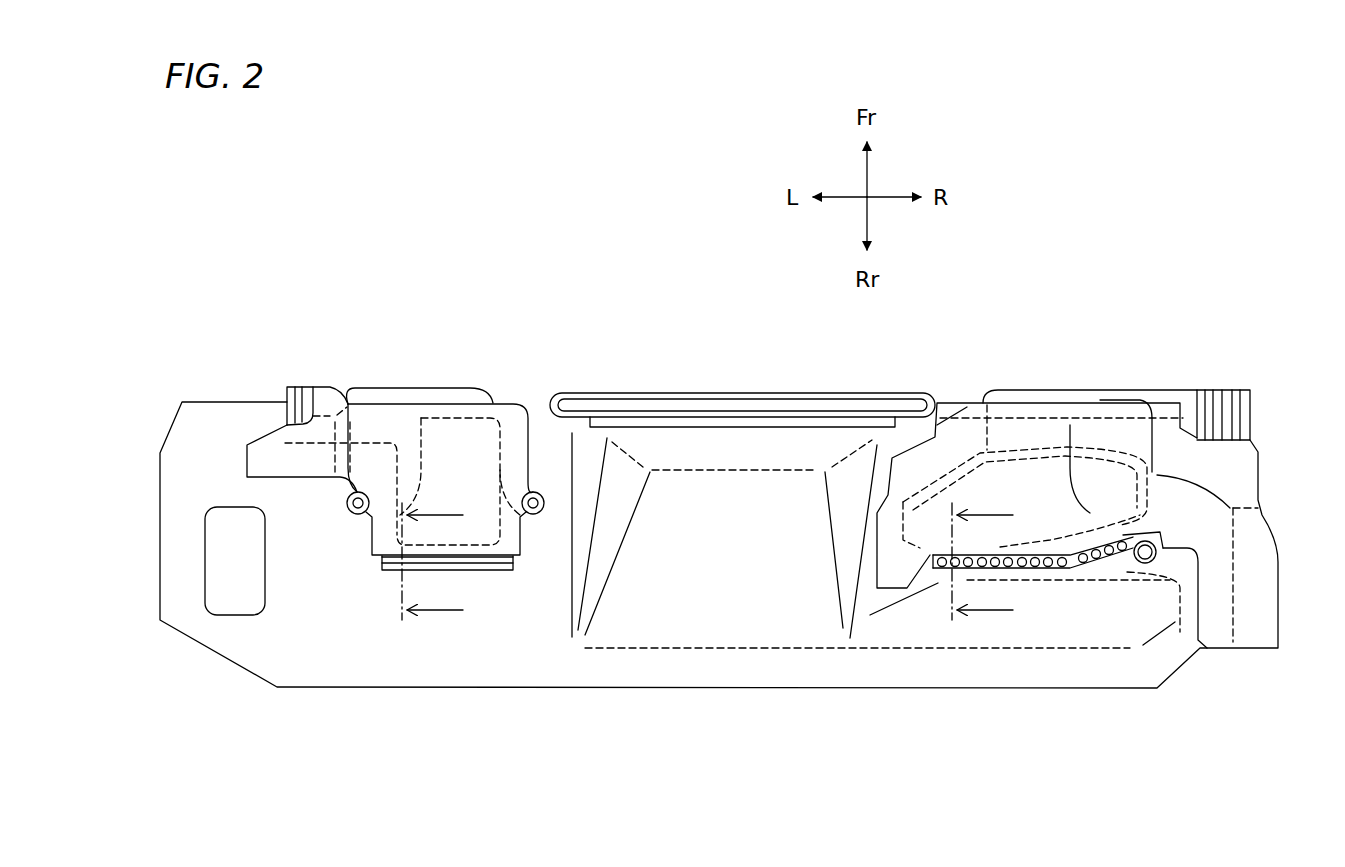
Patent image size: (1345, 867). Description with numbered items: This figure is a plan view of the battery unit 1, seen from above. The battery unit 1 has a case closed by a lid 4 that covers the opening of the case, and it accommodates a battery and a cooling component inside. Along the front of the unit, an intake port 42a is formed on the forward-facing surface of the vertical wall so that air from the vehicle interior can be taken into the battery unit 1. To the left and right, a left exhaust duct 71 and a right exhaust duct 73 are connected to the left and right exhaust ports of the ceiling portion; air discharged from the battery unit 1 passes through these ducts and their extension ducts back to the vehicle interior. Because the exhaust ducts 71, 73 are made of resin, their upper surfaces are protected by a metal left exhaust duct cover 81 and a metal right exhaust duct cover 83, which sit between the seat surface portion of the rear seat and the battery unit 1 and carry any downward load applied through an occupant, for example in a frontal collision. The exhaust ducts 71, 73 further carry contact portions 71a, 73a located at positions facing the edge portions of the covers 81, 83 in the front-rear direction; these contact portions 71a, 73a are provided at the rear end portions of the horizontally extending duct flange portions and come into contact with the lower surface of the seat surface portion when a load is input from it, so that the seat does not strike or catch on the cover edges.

The battery unit 1 is at (1256, 352).
The lid 4 is at (750, 653).
The intake port 42a is at (757, 402).
The left exhaust duct 71 is at (392, 398).
The contact portion 71a is at (497, 572).
The right exhaust duct 73 is at (1130, 400).
The contact portion 73a is at (1070, 572).
The left exhaust duct cover 81 is at (445, 437).
The right exhaust duct cover 83 is at (1037, 435).